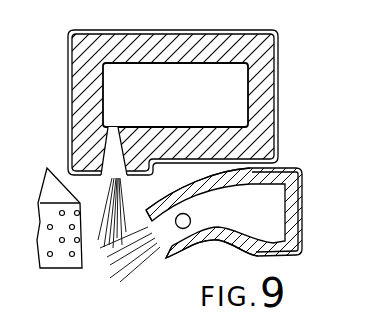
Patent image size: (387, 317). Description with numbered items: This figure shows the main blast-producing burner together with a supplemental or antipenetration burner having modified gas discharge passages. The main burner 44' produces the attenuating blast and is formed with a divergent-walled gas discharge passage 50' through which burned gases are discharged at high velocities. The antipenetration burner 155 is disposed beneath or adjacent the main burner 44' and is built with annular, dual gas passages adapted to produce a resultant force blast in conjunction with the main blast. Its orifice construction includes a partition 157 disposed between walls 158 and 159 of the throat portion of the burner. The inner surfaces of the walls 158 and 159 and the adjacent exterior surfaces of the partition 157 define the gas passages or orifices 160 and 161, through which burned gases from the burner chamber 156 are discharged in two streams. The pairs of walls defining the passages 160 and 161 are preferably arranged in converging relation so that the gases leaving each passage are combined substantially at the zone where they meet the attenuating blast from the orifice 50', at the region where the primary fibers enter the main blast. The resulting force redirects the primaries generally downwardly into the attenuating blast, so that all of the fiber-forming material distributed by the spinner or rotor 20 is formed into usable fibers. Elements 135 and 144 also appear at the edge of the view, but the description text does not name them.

The spinner or rotor 20 is at (55, 270).
The main burner 44' is at (193, 100).
The gas discharge passage 50' is at (131, 174).
The supply conduit 135 is at (12, 150).
The inlet 144 is at (6, 218).
The supplemental or antipenetration burner 155 is at (248, 256).
The burner chamber 156 is at (280, 209).
The partition 157 is at (190, 221).
The wall 158 is at (187, 195).
The wall 159 is at (186, 250).
The gas passage or orifice 160 is at (172, 197).
The gas passage or orifice 161 is at (178, 255).